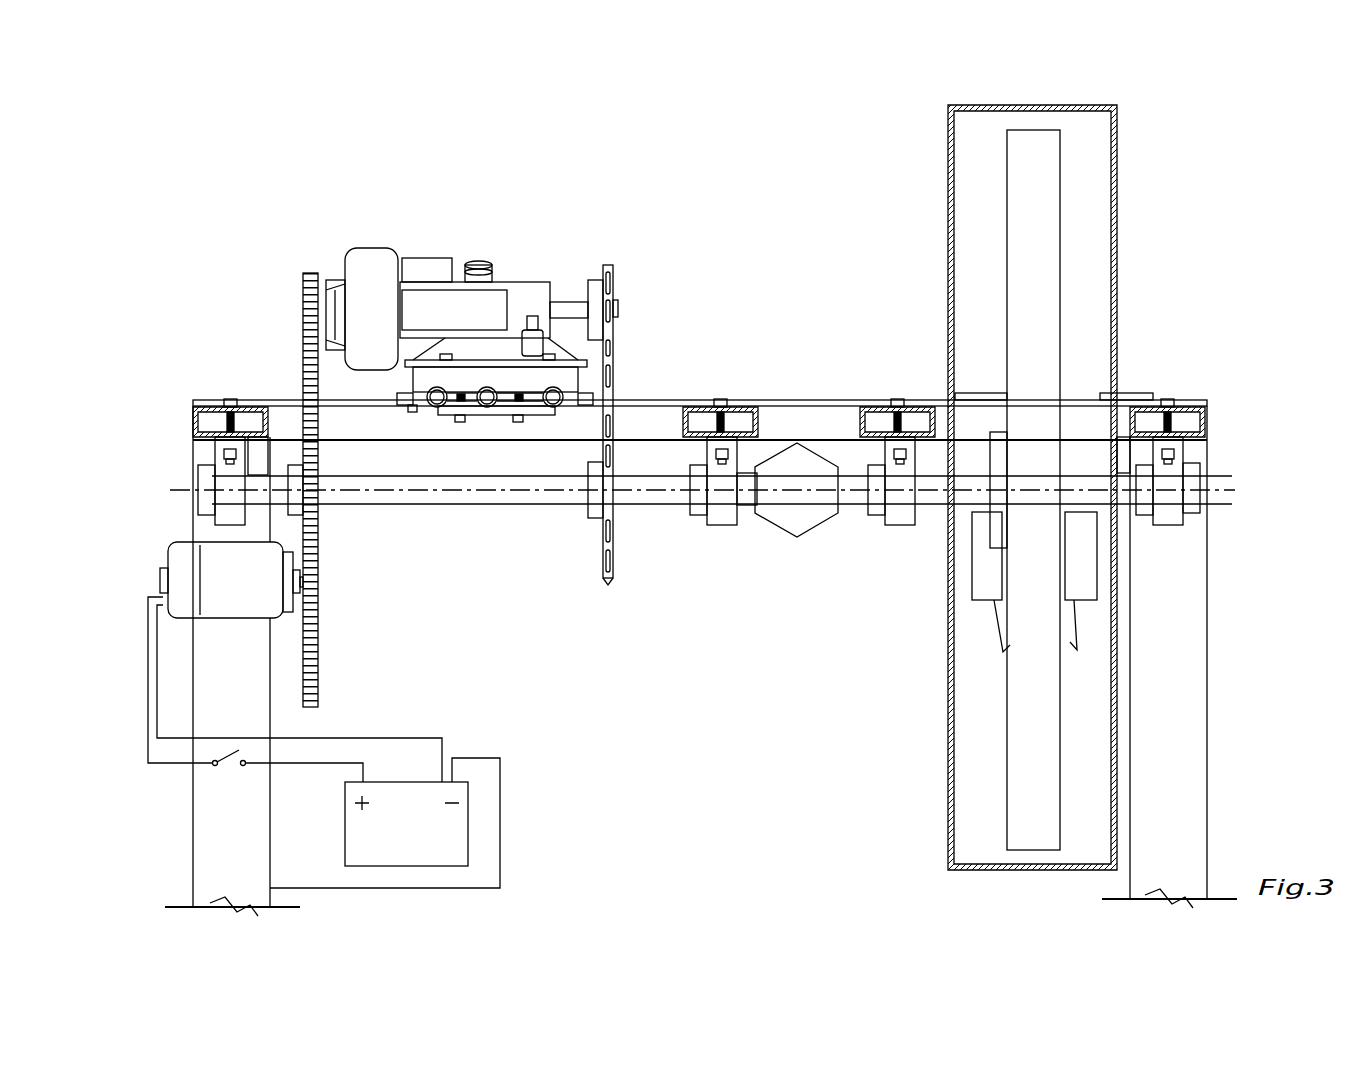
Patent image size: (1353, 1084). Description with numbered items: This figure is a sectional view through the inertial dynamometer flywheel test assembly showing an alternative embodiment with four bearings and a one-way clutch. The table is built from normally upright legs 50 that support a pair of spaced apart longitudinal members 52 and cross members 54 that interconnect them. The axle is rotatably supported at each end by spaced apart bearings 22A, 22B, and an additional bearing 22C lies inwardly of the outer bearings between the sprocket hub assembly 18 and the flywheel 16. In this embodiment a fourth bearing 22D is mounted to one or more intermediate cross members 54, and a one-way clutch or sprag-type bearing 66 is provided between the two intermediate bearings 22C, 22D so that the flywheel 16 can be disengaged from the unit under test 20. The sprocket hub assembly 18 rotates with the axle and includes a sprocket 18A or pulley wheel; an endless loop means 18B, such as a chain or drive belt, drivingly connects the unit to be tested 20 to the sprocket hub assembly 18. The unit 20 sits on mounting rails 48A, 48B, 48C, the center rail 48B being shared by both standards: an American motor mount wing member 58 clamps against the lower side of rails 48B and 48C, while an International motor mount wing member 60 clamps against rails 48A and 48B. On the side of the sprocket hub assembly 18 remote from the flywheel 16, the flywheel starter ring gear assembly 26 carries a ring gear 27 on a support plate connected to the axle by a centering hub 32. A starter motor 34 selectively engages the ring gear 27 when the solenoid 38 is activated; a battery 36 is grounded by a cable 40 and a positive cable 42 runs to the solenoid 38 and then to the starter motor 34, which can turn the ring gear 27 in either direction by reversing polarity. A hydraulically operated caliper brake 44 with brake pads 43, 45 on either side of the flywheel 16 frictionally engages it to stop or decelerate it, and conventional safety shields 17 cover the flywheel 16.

The flywheel 16 is at (1057, 222).
The safety shields 17 is at (1117, 160).
The sprocket hub assembly 18 is at (612, 541).
The sprocket 18A is at (605, 572).
The endless loop means 18B is at (615, 392).
The unit to be tested 20 is at (523, 276).
The bearing 22A is at (232, 515).
The bearing 22B is at (1175, 522).
The bearing 22C is at (713, 527).
The fourth bearing 22D is at (892, 527).
The flywheel starter ring gear assembly 26 is at (322, 690).
The ring gear 27 is at (318, 637).
The centering hub 32 is at (297, 465).
The starter motor 34 is at (252, 620).
The battery 36 is at (413, 867).
The solenoid 38 is at (237, 748).
The cable 40 is at (500, 827).
The positive cable 42 is at (170, 765).
The brake pad 43 is at (1073, 578).
The caliper brake 44 is at (1003, 652).
The brake pad 45 is at (997, 578).
The mounting rail 48A is at (553, 395).
The mounting rail 48B is at (487, 410).
The mounting rail 48C is at (437, 410).
The legs 50 is at (255, 795).
The longitudinal members 52 is at (850, 402).
The cross members 54 is at (212, 405).
The American motor mount wing member 58 is at (450, 410).
The International motor mount wing member 60 is at (537, 412).
The one-way clutch 66 is at (795, 522).